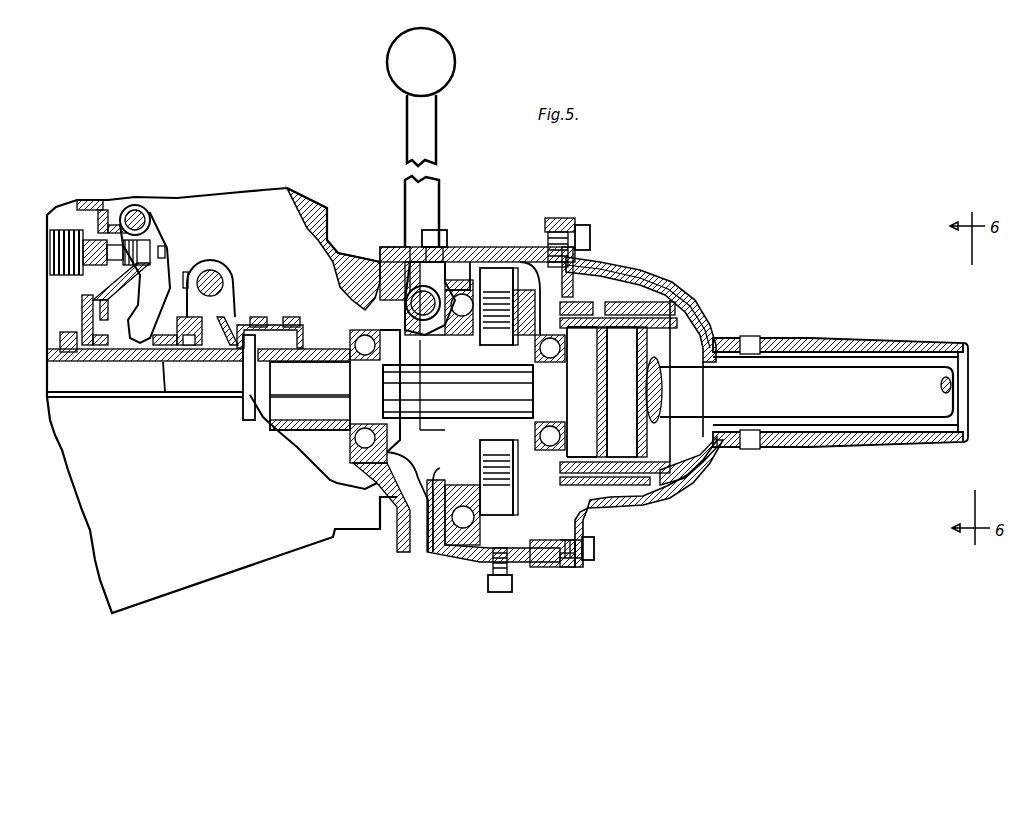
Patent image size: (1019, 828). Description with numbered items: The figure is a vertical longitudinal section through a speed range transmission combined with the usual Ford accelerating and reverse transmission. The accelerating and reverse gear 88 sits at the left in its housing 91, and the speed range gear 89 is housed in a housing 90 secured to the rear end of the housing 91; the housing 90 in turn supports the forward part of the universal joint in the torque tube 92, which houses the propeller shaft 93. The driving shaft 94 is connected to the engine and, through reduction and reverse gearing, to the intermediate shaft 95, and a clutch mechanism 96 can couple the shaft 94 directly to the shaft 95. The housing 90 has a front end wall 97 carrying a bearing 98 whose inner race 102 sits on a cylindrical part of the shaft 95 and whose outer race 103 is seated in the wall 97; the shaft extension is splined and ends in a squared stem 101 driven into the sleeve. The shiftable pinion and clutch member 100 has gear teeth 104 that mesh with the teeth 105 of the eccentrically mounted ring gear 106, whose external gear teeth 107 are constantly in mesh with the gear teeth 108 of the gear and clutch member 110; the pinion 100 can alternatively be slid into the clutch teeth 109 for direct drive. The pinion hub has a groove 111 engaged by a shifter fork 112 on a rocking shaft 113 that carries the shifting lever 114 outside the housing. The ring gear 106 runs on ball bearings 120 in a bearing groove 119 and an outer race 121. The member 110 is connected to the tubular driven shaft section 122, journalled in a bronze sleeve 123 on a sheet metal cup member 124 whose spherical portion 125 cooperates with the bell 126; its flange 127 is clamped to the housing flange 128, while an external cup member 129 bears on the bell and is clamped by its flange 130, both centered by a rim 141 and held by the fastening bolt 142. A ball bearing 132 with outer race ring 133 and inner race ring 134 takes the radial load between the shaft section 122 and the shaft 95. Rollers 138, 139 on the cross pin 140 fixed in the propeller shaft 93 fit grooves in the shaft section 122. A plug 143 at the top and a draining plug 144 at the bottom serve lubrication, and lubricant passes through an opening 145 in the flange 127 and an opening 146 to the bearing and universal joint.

The accelerating and reverse gear 88 is at (250, 185).
The speed range gear 89 is at (624, 232).
The housing 90 is at (470, 246).
The housing 91 is at (330, 240).
The torque tube 92 is at (795, 338).
The propeller shaft 93 is at (822, 367).
The driving shaft 94 is at (55, 380).
The intermediate shaft 95 is at (210, 365).
The clutch mechanism 96 is at (112, 205).
The front end wall 97 is at (372, 297).
The bearing 98 is at (352, 336).
The shiftable pinion and clutch member 100 is at (480, 428).
The squared stud or stem 101 is at (268, 412).
The inner race 102 is at (352, 434).
The outer race 103 is at (382, 445).
The gear teeth 104 is at (460, 440).
The teeth 105 is at (405, 530).
The ring gear 106 is at (420, 550).
The external gear teeth 107 is at (499, 313).
The gear teeth 108 is at (490, 245).
The teeth 109 is at (518, 452).
The gear and clutch member 110 is at (520, 255).
The groove 111 is at (416, 443).
The shifter fork 112 is at (388, 300).
The rocking shaft 113 is at (395, 258).
The shifting lever 114 is at (415, 149).
The bearing groove 119 is at (450, 548).
The ball bearings 120 is at (462, 570).
The outer race 121 is at (468, 548).
The driven shaft section 122 is at (694, 303).
The bronze sleeve 123 is at (676, 292).
The sheet metal cup member 124 is at (618, 380).
The spherical portion 125 is at (706, 322).
The bell 126 is at (716, 340).
The flange 127 is at (575, 255).
The flange 128 is at (552, 218).
The external cup member 129 is at (650, 283).
The flange 130 is at (582, 225).
The ball bearing 132 is at (589, 345).
The outer race ring 133 is at (569, 342).
The inner race ring 134 is at (550, 420).
The rollers 138 is at (630, 350).
The rollers 139 is at (600, 355).
The cross pin 140 is at (662, 392).
The rim 141 is at (585, 566).
The fastening bolt 142 is at (596, 545).
The plug 143 is at (422, 238).
The draining plug 144 is at (500, 592).
The opening 145 is at (605, 272).
The opening 146 is at (642, 259).